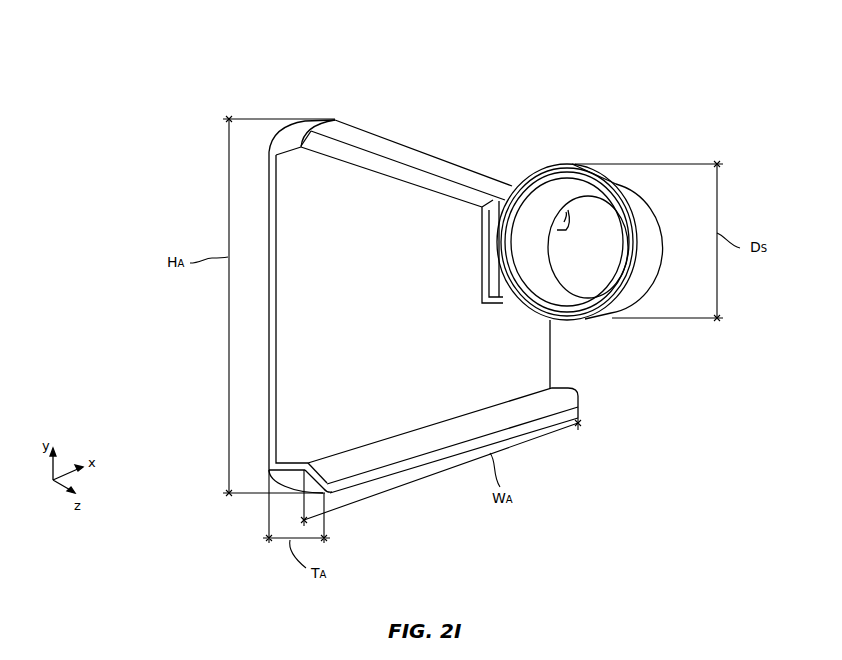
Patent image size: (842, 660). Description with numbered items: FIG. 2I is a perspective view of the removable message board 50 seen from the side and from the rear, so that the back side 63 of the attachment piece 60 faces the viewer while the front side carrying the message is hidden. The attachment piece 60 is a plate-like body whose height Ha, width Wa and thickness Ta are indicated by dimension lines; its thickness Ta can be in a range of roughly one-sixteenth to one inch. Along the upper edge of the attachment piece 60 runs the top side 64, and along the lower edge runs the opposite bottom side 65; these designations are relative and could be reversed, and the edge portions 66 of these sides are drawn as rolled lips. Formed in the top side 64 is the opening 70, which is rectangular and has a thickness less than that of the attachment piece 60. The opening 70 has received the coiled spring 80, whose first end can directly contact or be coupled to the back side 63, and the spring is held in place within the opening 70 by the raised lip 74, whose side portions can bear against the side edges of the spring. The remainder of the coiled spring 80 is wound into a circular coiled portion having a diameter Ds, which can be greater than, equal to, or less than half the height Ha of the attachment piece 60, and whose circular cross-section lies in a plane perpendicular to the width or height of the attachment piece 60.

The message board 50 is at (268, 79).
The attachment piece 60 is at (597, 372).
The back side 63 is at (409, 306).
The top side 64 is at (423, 150).
The bottom side 65 is at (402, 472).
The edge lip 66 is at (388, 163).
The opening 70 is at (520, 145).
The raised lip 74 is at (483, 250).
The coiled spring 80 is at (648, 270).